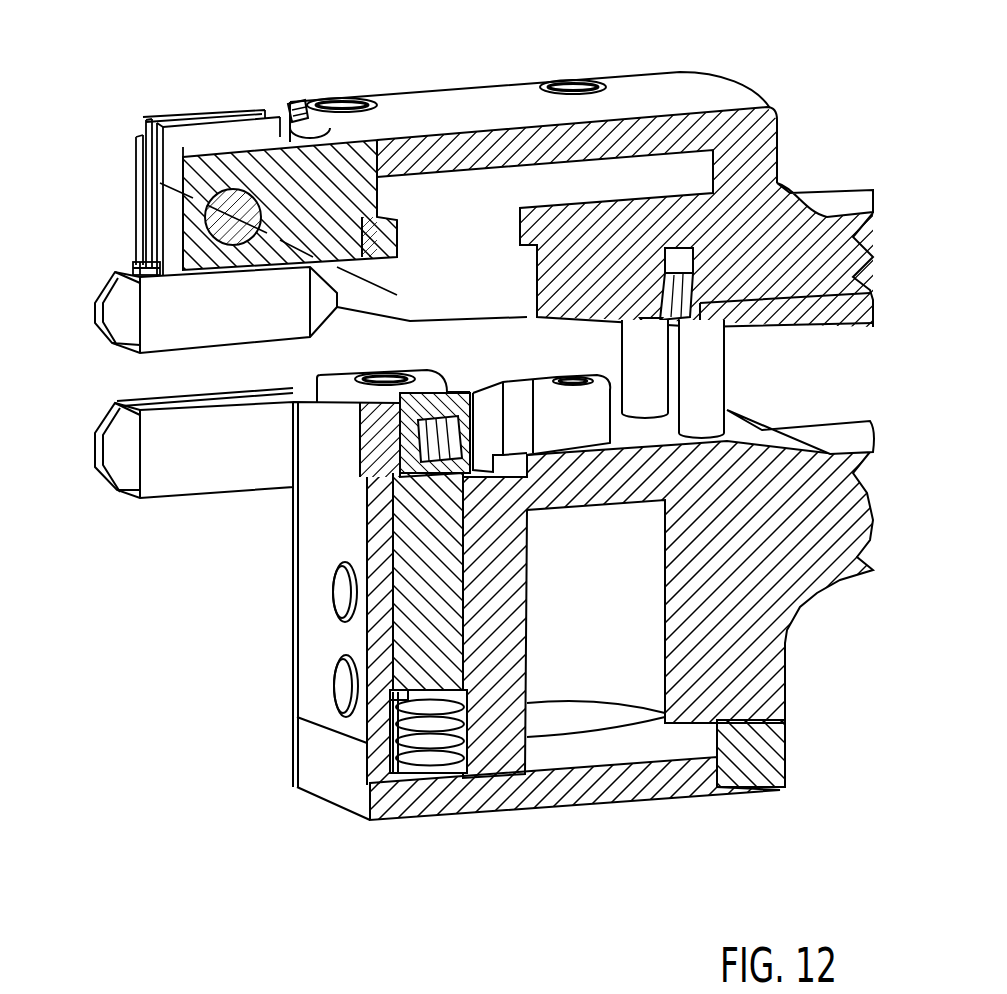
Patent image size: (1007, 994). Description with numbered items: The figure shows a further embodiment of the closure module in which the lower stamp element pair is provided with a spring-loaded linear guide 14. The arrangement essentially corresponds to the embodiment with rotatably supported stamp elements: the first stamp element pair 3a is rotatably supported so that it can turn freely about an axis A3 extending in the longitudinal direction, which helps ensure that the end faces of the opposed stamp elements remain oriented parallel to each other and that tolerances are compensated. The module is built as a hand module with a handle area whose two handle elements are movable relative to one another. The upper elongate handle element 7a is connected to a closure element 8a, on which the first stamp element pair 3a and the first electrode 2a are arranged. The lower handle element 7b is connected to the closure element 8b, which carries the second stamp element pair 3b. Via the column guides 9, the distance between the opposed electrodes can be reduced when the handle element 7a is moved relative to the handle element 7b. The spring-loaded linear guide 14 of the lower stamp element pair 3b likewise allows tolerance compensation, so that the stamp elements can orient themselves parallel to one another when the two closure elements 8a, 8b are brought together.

The closure element 8a is at (480, 95).
The closure element 8b is at (653, 438).
The upper elongate handle element 7a is at (826, 223).
The lower handle element 7b is at (828, 470).
The column guides 9 is at (710, 378).
The spring-loaded linear guide 14 is at (440, 662).
The first stamp element pair 3a is at (177, 503).
The second stamp element pair 3b is at (107, 347).
The first electrode 2a is at (130, 267).
The axis A3 is at (127, 168).